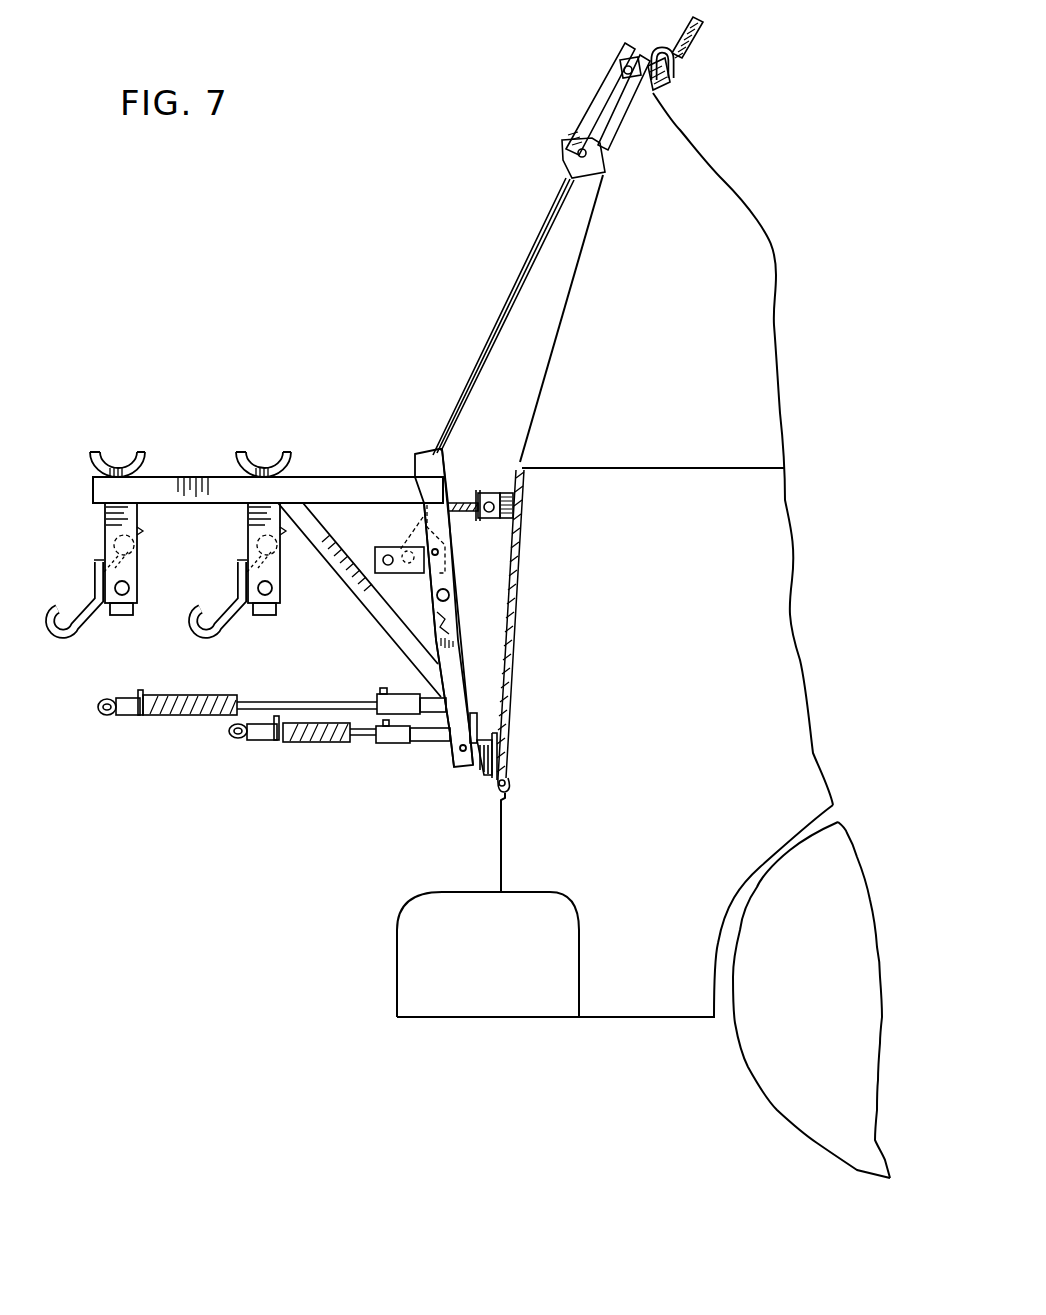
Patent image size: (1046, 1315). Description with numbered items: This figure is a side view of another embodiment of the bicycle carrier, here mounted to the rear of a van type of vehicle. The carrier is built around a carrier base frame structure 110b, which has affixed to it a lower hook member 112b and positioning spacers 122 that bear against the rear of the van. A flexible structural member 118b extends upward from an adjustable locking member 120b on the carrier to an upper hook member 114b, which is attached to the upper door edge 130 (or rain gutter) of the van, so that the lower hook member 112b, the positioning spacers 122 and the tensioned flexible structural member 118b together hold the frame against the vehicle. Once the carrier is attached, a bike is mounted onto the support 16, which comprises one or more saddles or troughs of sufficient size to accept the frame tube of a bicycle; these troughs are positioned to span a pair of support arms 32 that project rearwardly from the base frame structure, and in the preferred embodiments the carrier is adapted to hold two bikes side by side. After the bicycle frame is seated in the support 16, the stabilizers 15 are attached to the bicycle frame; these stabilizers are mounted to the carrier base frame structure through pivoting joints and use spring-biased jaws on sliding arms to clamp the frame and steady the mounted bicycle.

The stabilizers 15 is at (173, 743).
The support 16 is at (142, 440).
The support arms 32 is at (93, 500).
The carrier base frame structure 110b is at (375, 468).
The lower hook member 112b is at (507, 790).
The upper hook member 114b is at (671, 65).
The flexible structural member 118b is at (535, 252).
The adjustable locking member 120b is at (466, 555).
The positioning spacers 122 is at (480, 496).
The upper door edge 130 is at (660, 84).